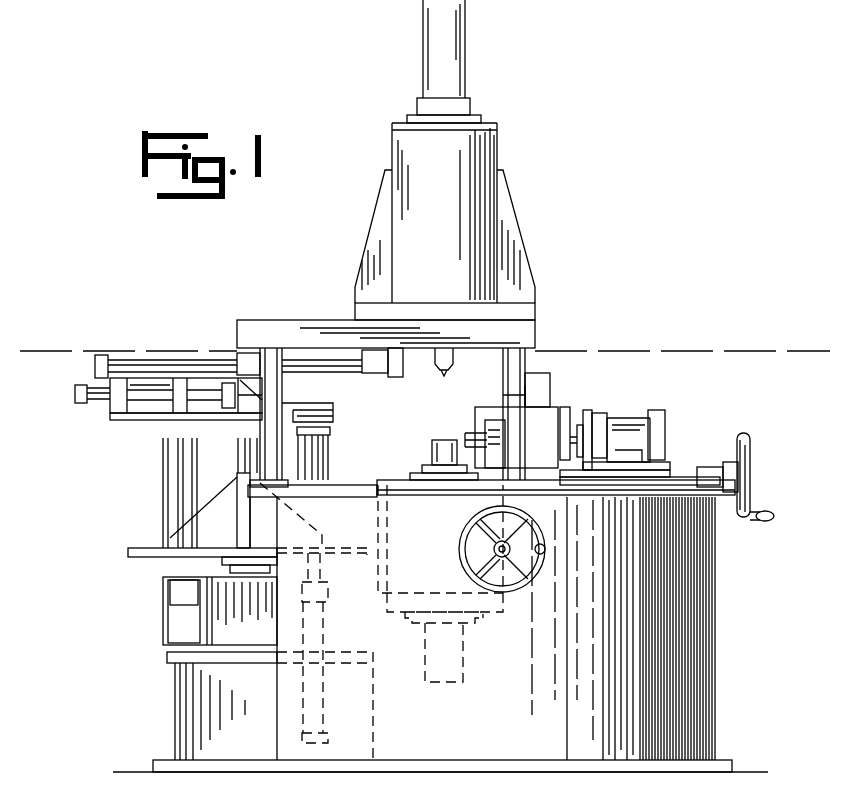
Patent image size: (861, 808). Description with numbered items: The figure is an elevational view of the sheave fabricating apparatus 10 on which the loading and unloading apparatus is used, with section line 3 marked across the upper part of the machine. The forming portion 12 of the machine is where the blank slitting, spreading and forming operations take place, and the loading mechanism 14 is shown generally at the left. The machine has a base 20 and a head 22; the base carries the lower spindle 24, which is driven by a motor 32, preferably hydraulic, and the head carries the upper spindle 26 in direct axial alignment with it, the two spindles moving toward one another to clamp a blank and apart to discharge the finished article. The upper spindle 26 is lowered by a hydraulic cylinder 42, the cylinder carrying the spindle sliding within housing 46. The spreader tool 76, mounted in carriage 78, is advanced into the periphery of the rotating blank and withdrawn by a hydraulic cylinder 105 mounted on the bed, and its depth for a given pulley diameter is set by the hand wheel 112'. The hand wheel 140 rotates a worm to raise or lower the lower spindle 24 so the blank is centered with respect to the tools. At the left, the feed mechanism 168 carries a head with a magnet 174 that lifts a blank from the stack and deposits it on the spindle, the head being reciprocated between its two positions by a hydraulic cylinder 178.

The section line 3- 3 is at (787, 392).
The sheave fabricating apparatus 10 is at (640, 326).
The forming portion of the machine 12 is at (490, 385).
The loading mechanism 14 is at (128, 550).
The base 20 is at (690, 608).
The head 22 is at (548, 282).
The lower spindle 24 is at (440, 452).
The upper spindle 26 is at (443, 366).
The motor 32 is at (448, 680).
The hydraulic cylinder 42 is at (455, 52).
The housing 46 is at (410, 200).
The spreader tool 76 is at (472, 437).
The carriage 78 is at (566, 407).
The hydraulic cylinder 105 is at (628, 415).
The hand wheel 112' is at (767, 477).
The hand wheel 140 is at (472, 560).
The feed mechanism 168 is at (168, 425).
The magnet 174 is at (322, 430).
The hydraulic cylinder 178 is at (75, 393).